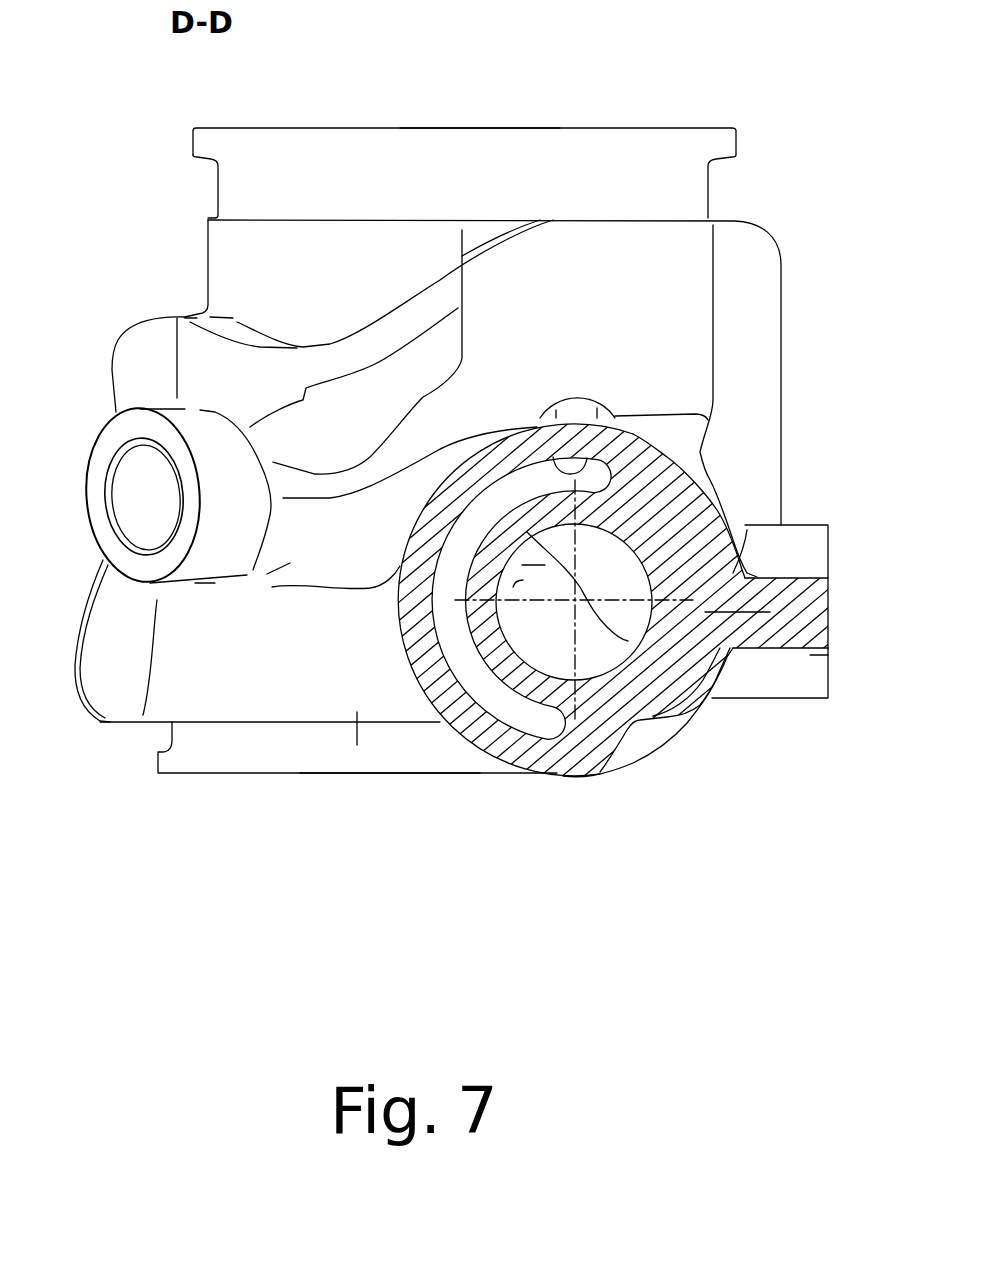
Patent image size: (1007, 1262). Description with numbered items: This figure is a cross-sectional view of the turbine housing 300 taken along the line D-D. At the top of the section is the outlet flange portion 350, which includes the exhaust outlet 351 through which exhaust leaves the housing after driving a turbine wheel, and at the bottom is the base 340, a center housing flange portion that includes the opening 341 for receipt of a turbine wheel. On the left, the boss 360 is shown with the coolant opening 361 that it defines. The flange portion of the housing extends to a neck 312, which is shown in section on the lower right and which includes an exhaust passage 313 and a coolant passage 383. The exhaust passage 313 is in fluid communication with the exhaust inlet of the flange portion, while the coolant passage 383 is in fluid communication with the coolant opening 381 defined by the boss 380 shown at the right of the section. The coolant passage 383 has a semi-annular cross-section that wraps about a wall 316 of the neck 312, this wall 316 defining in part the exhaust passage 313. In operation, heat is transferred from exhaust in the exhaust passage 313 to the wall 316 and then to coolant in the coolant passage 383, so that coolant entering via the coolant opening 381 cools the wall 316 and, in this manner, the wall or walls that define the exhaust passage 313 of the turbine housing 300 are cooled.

The turbine housing 300 is at (632, 58).
The neck 312 is at (580, 775).
The exhaust passage 313 is at (571, 646).
The wall 316 is at (568, 572).
The base 340 is at (268, 777).
The opening 341 is at (375, 802).
The outlet flange portion 350 is at (337, 128).
The exhaust outlet 351 is at (465, 112).
The boss 360 is at (203, 562).
The coolant opening 361 is at (120, 462).
The boss 380 is at (828, 683).
The coolant opening 381 is at (852, 547).
The coolant passage 383 is at (541, 726).